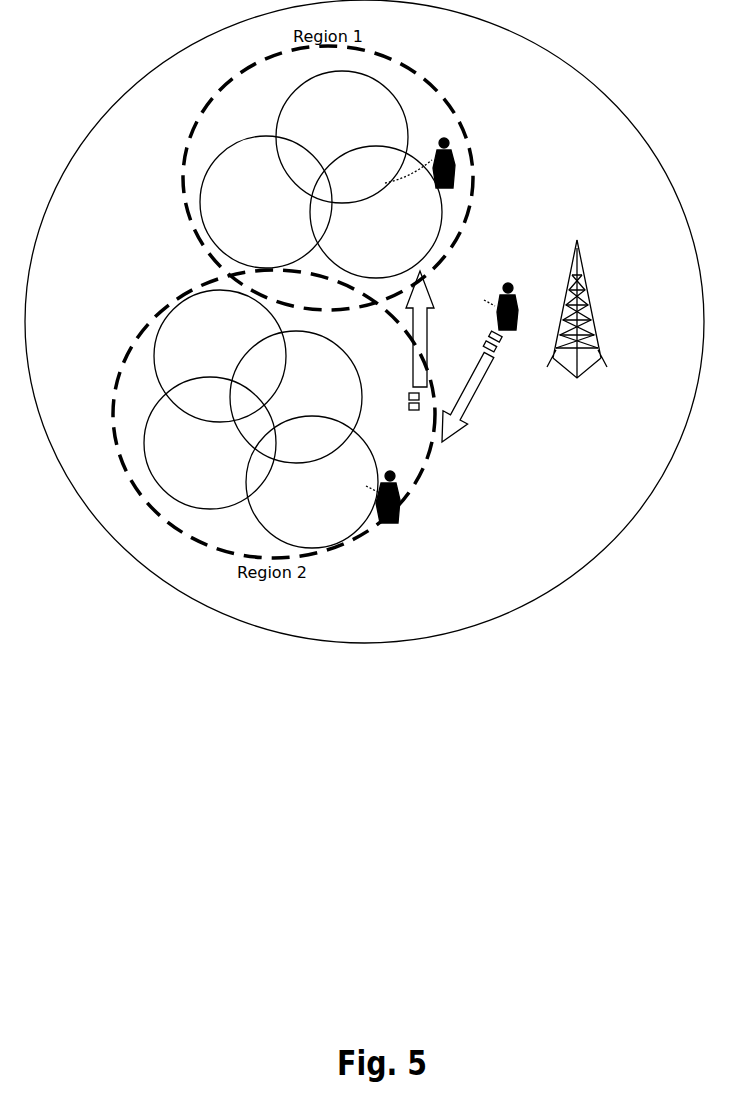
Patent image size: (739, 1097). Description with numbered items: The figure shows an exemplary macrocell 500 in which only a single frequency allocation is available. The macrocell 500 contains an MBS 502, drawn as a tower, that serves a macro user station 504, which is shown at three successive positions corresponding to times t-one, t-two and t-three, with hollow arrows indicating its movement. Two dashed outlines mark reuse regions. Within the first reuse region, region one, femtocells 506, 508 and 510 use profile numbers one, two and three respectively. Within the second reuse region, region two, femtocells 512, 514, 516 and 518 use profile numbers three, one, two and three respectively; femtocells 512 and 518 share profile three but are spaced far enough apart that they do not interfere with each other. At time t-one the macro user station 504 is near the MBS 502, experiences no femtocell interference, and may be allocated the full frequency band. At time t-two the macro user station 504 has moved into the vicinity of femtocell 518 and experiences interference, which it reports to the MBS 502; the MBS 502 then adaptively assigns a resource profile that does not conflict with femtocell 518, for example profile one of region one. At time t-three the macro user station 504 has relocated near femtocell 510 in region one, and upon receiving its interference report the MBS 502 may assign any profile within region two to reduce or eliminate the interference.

The macrocell 500 is at (575, 58).
The MBS 502 is at (577, 323).
The macro user station 504 is at (455, 150).
The femtocell 506 is at (342, 137).
The femtocell 508 is at (266, 202).
The femtocell 510 is at (376, 212).
The femtocell 512 is at (220, 356).
The femtocell 514 is at (296, 397).
The femtocell 516 is at (210, 443).
The femtocell 518 is at (312, 482).